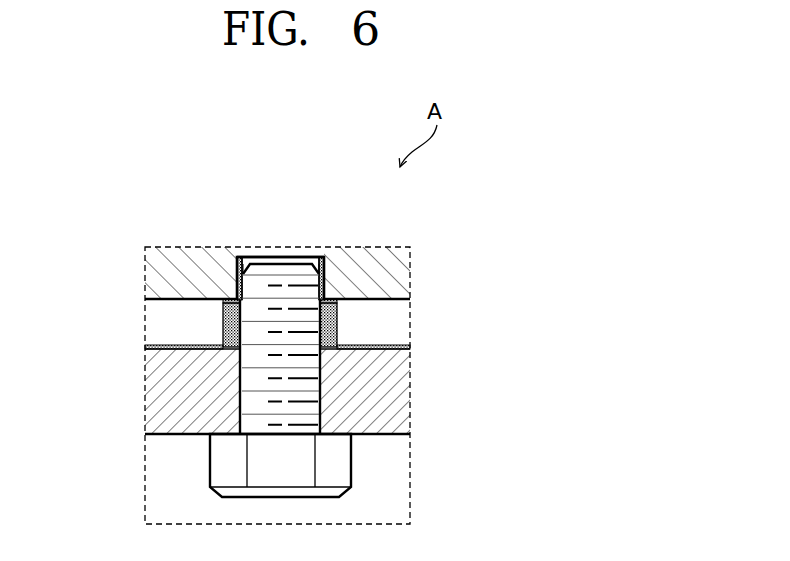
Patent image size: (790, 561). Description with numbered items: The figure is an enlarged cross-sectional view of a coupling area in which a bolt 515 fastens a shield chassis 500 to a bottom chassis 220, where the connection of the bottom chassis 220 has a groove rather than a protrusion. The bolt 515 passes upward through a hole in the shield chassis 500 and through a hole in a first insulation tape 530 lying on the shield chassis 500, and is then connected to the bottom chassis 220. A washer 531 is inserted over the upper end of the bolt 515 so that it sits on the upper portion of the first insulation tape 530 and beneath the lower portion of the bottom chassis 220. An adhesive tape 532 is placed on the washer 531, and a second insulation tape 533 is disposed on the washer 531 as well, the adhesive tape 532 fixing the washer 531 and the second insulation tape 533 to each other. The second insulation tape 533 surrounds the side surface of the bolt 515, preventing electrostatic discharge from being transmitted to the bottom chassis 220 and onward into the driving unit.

The bottom chassis 220 is at (398, 265).
The shield chassis 500 is at (398, 394).
The bolt 515 is at (340, 461).
The first insulation tape 530 is at (400, 347).
The washer 531 is at (223, 325).
The adhesive tape 532 is at (223, 304).
The second insulation tape 533 is at (237, 278).